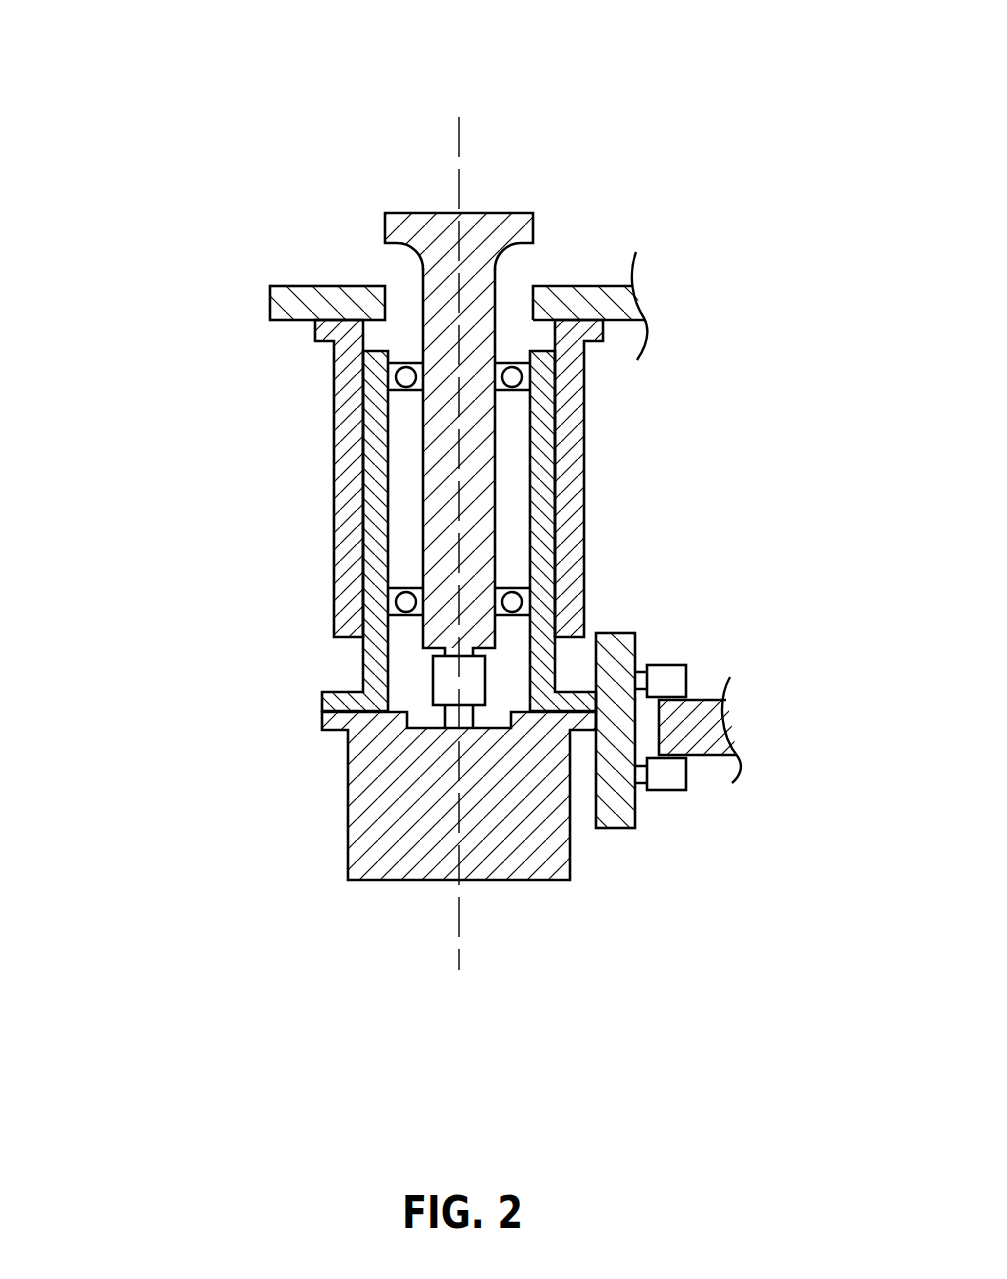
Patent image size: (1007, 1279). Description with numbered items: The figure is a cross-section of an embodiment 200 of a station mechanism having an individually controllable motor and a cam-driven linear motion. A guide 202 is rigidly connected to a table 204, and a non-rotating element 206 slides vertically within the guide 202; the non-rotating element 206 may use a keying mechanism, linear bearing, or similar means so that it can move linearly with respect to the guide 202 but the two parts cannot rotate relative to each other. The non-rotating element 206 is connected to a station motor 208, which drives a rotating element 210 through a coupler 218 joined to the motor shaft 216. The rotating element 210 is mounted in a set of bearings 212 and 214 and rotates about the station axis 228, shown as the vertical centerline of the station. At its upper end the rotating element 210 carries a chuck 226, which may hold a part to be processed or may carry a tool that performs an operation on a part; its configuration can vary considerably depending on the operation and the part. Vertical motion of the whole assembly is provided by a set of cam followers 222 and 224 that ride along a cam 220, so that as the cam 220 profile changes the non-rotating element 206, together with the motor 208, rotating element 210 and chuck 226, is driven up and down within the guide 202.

The embodiment 200 is at (340, 1010).
The guide 202 is at (333, 479).
The table 204 is at (270, 301).
The non-rotating element 206 is at (363, 670).
The station motor 208 is at (348, 853).
The rotating element 210 is at (535, 222).
The bearing 212 is at (509, 366).
The bearing 214 is at (512, 591).
The motor shaft 216 is at (472, 715).
The coupler 218 is at (427, 682).
The cam 220 is at (728, 740).
The cam follower 222 is at (685, 665).
The cam follower 224 is at (673, 790).
The chuck 226 is at (403, 213).
The station axis 228 is at (458, 137).